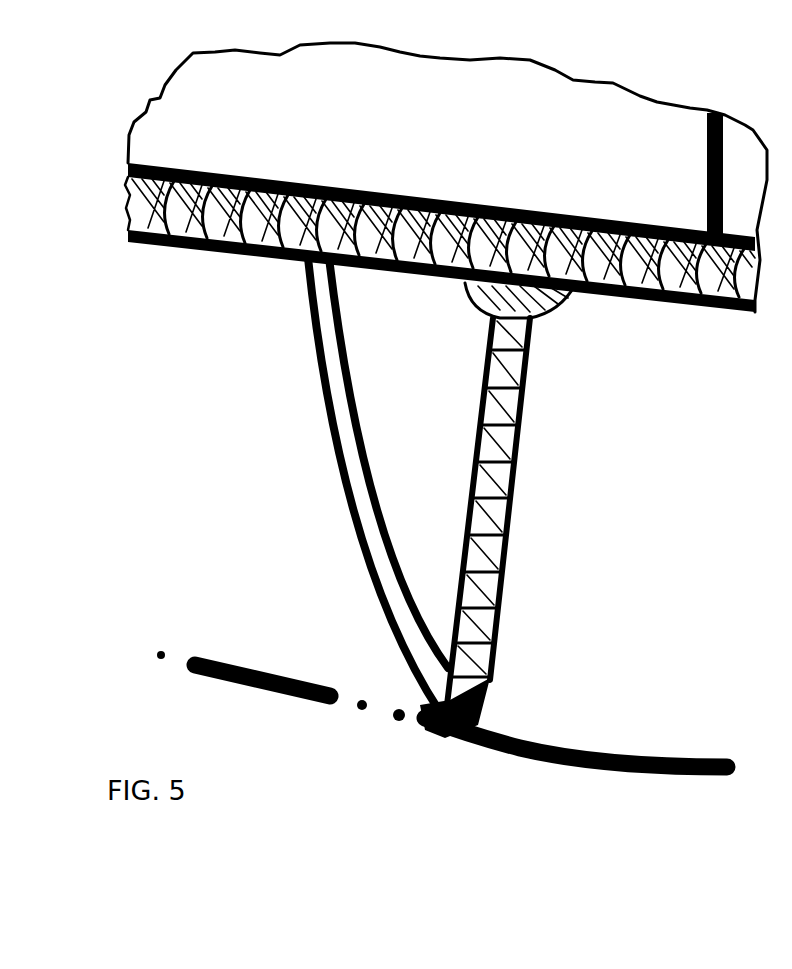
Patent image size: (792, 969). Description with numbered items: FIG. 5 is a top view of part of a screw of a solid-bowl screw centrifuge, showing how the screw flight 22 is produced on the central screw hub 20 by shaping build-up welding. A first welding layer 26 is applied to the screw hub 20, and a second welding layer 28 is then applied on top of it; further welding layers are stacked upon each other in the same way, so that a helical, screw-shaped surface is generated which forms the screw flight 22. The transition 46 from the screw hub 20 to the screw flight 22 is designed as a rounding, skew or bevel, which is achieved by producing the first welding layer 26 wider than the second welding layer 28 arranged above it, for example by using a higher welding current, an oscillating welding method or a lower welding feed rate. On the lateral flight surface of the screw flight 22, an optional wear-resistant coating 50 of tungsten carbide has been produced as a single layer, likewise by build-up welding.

The screw hub 20 is at (190, 262).
The screw flight 22 is at (504, 603).
The first welding layer 26 is at (553, 313).
The second welding layer 28 is at (488, 346).
The transition 46 is at (455, 322).
The wear-resistant coating 50 is at (395, 642).